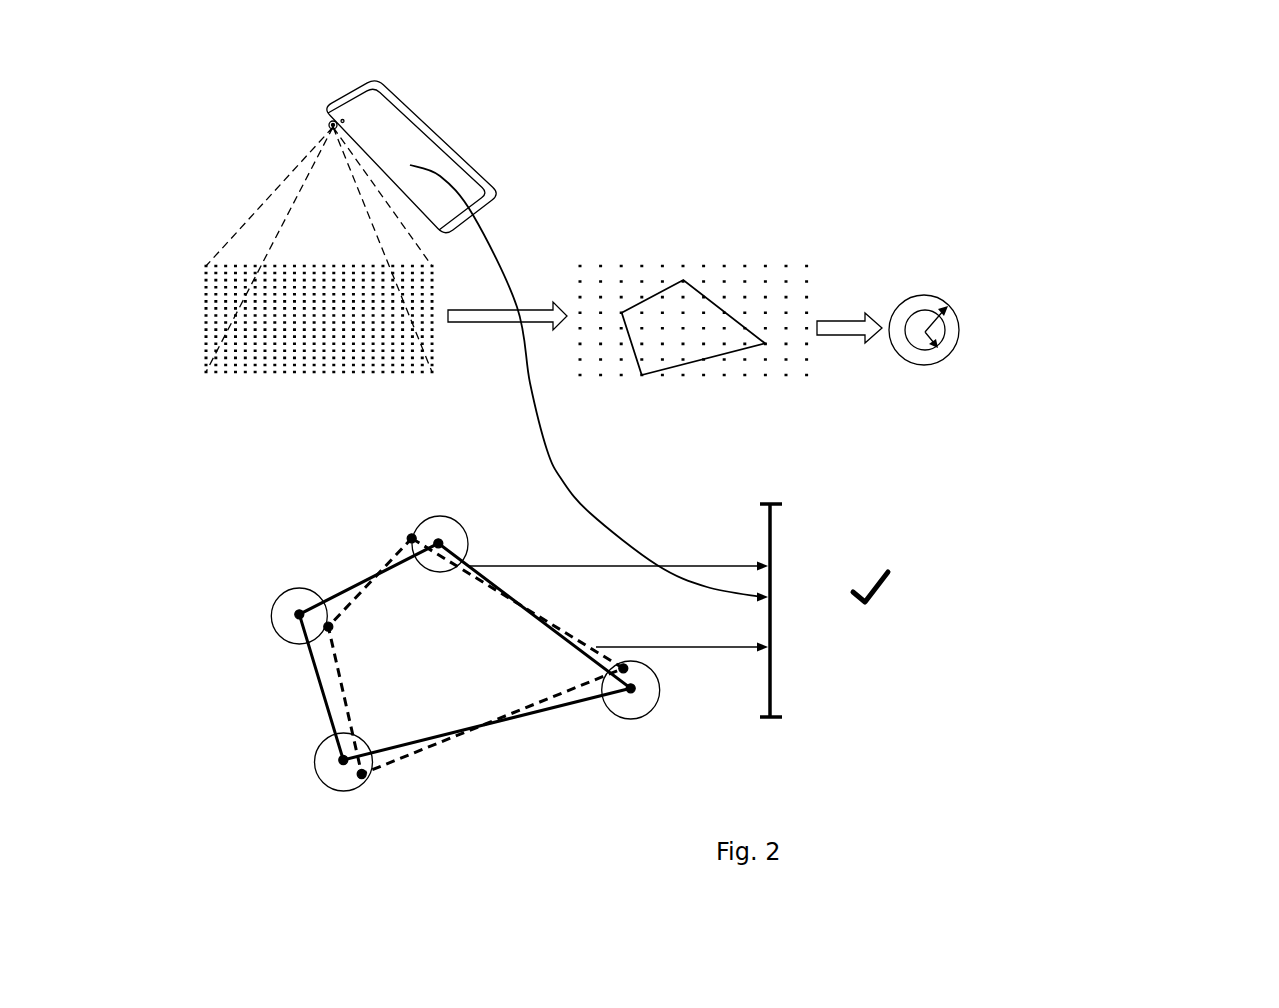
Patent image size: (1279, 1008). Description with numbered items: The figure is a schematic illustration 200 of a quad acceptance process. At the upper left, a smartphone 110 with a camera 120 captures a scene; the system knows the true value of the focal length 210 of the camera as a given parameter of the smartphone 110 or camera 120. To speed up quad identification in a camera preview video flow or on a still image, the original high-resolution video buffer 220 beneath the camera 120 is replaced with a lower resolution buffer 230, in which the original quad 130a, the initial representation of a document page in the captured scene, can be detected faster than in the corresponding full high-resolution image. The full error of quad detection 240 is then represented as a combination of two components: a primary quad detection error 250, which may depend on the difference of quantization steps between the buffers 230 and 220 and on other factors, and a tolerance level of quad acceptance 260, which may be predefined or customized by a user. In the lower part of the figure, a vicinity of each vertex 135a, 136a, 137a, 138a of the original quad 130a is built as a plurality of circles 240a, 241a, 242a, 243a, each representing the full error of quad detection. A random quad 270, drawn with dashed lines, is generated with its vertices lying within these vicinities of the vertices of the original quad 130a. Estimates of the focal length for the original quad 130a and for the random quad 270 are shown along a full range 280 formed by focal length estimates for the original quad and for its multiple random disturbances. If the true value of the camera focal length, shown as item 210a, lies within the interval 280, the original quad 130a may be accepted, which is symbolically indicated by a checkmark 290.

The schematic illustration 200 is at (1237, 113).
The smartphone 110 is at (404, 97).
The camera 120 is at (328, 123).
The true value of the focal length 210 is at (408, 147).
The original high-resolution video buffer 220 is at (252, 380).
The lower resolution buffer 230 is at (742, 378).
The original quad 130a is at (686, 280).
The full error of quad detection 240 is at (918, 296).
The primary quad detection error 250 is at (913, 357).
The tolerance level of quad acceptance 260 is at (950, 328).
The random quad 270 is at (377, 565).
The vertex 135a is at (288, 643).
The vertex 136a is at (440, 543).
The vertex 137a is at (610, 716).
The vertex 138a is at (336, 790).
The circle 240a is at (276, 590).
The circle 241a is at (425, 518).
The circle 242a is at (647, 718).
The circle 243a is at (367, 800).
The full range 280 is at (762, 513).
The true value of the camera focal length 210a is at (762, 602).
The checkmark 290 is at (892, 582).